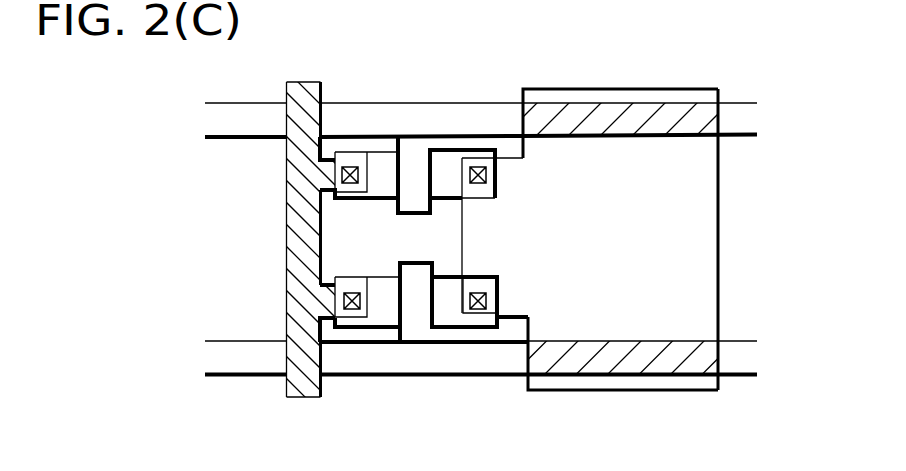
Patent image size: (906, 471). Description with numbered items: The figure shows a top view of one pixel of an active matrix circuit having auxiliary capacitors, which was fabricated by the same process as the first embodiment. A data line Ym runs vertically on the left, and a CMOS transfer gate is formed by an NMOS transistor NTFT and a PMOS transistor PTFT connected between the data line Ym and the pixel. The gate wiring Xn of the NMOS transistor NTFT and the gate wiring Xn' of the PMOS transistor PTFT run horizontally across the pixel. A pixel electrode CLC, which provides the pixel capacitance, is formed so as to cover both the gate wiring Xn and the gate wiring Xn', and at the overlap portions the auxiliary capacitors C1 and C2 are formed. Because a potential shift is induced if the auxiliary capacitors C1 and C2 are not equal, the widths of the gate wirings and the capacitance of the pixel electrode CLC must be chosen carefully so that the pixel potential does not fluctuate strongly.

The gate wiring Xn is at (452, 107).
The gate wiring Xn' is at (453, 345).
The data line Ym is at (296, 306).
The NMOS transistor NTFT is at (502, 118).
The PMOS transistor PTFT is at (507, 358).
The auxiliary capacitor C1 is at (597, 126).
The auxiliary capacitor C2 is at (653, 348).
The pixel electrode CLC is at (708, 192).